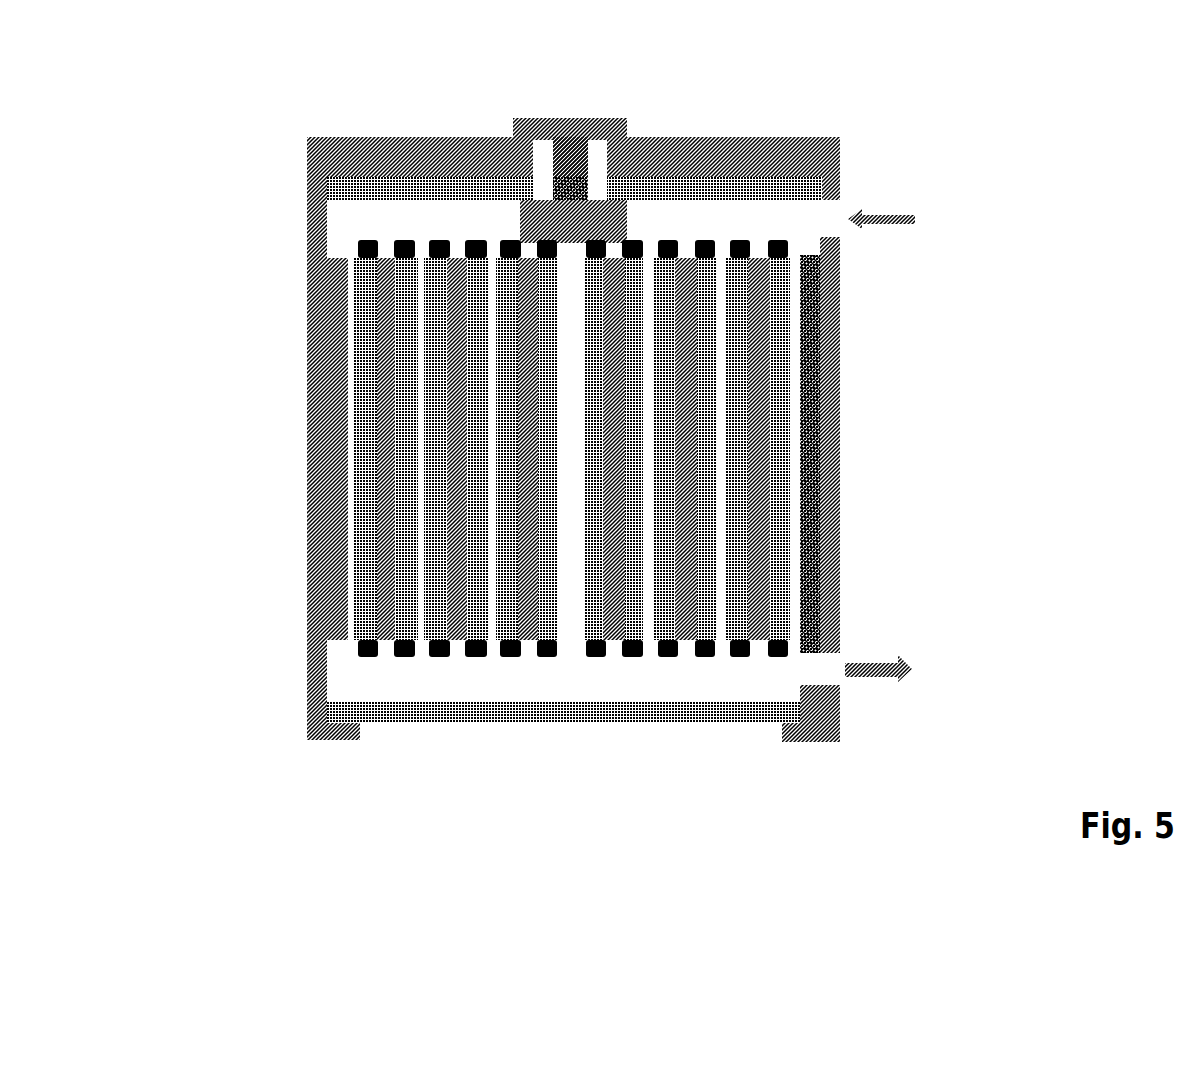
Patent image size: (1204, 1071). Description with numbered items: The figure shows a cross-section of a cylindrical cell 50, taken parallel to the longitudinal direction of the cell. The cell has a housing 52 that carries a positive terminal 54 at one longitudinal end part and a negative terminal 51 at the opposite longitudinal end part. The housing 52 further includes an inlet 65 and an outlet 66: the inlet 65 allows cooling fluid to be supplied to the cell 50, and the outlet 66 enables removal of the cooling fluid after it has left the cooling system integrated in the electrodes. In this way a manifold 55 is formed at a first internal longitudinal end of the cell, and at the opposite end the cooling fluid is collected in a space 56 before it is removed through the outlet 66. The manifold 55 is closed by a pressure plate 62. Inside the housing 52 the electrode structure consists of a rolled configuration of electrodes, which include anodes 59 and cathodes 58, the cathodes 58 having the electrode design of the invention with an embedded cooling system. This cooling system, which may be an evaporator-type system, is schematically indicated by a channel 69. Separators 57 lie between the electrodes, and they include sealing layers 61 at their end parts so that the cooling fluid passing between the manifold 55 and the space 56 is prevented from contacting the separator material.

The cylindrical cell 50 is at (428, 137).
The negative terminal 51 is at (608, 705).
The housing 52 is at (793, 148).
The positive terminal 54 is at (600, 122).
The manifold 55 is at (365, 222).
The space 56 is at (442, 680).
The separators 57 is at (773, 316).
The cathodes 58 is at (800, 412).
The anodes 59 is at (383, 395).
The sealing layers 61 is at (775, 242).
The pressure plate 62 is at (340, 192).
The inlet 65 is at (838, 227).
The outlet 66 is at (827, 668).
The channel 69 is at (793, 560).